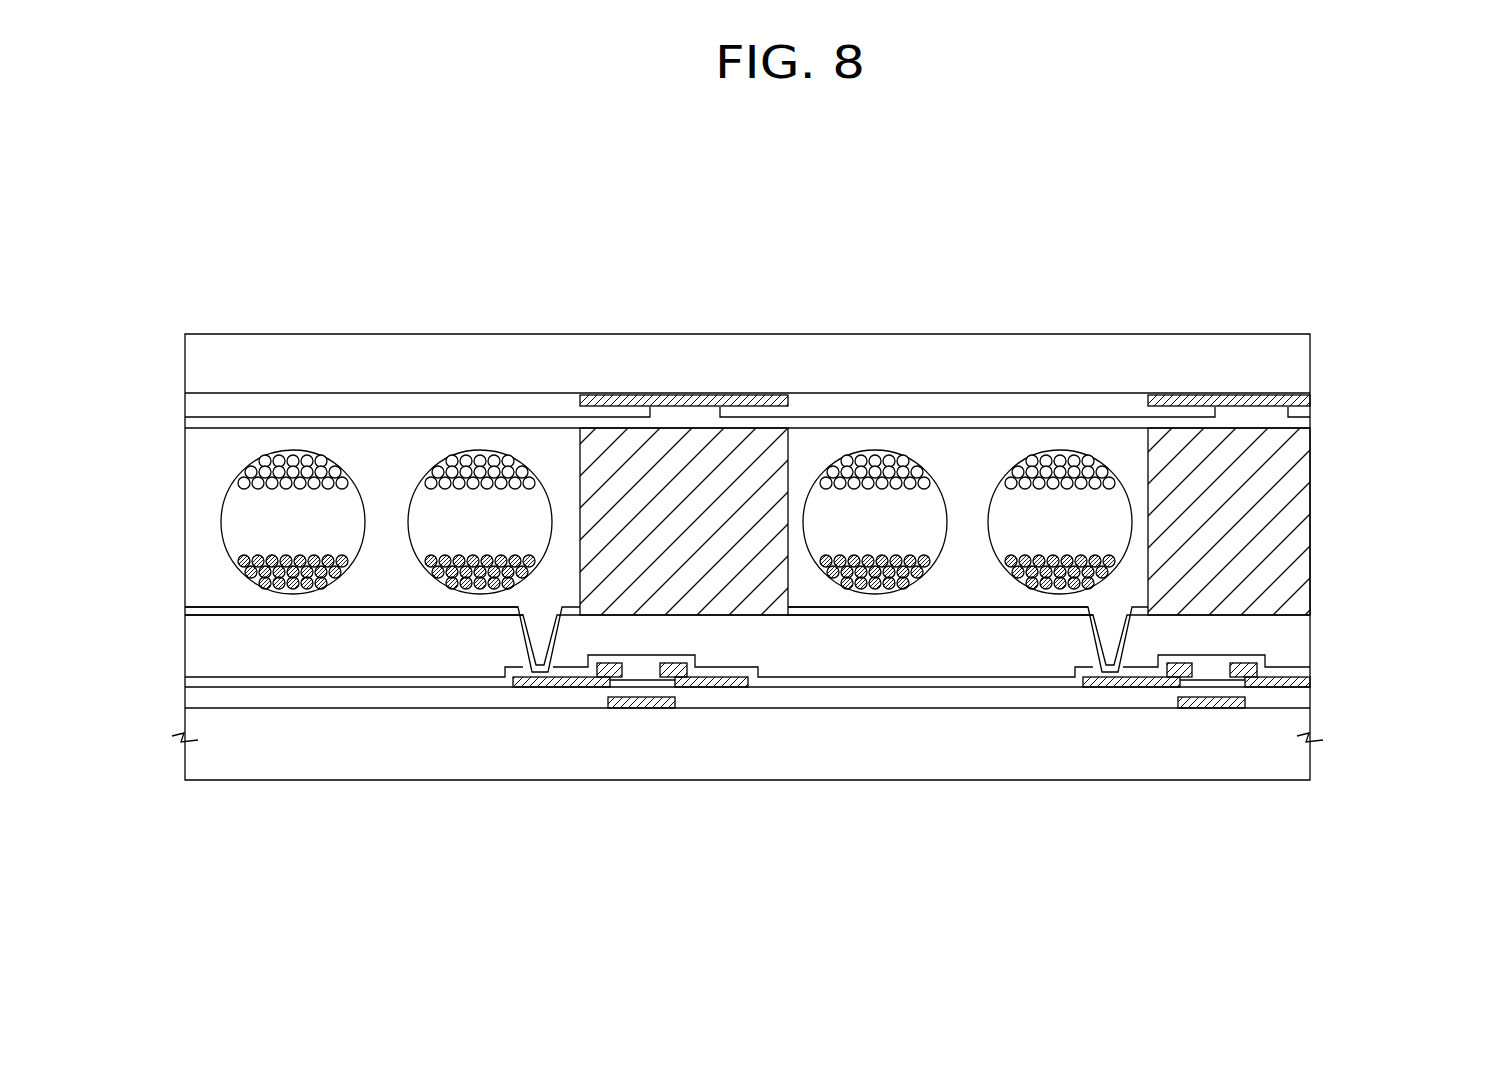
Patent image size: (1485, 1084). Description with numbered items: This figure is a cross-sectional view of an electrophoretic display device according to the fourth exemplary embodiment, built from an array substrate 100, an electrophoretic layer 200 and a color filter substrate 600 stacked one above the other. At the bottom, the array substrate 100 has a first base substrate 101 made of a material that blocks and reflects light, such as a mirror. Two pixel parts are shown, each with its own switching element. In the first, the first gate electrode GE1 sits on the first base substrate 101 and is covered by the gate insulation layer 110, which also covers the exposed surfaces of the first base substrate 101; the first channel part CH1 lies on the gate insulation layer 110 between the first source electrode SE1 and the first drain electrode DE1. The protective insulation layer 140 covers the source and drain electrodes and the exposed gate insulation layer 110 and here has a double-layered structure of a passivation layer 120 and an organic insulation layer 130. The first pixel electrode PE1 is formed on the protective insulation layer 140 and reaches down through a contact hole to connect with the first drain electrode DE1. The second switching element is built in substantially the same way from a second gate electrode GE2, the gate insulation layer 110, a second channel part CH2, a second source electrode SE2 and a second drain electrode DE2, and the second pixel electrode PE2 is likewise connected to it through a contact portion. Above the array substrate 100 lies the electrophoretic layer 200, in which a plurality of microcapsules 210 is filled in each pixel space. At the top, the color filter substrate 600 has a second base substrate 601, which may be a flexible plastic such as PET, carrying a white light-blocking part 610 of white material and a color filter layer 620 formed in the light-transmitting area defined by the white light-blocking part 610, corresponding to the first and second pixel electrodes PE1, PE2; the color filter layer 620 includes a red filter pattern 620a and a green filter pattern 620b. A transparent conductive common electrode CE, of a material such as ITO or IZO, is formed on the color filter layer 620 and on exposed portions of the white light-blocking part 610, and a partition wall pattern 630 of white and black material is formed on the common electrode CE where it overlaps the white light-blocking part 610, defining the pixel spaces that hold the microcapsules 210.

The color filter substrate 600 is at (168, 336).
The second base substrate 601 is at (1304, 360).
The white light-blocking part 610 is at (1304, 398).
The color filter layer 620 is at (1020, 262).
The red filter pattern 620a is at (496, 402).
The green filter pattern 620b is at (986, 400).
The common electrode CE is at (1253, 418).
The electrophoretic layer 200 is at (168, 430).
The microcapsules 210 is at (850, 458).
The partition wall pattern 630 is at (1292, 483).
The array substrate 100 is at (168, 610).
The protective insulation layer 140 is at (1405, 627).
The organic insulation layer 130 is at (1304, 637).
The passivation layer 120 is at (1304, 668).
The gate insulation layer 110 is at (1304, 697).
The first base substrate 101 is at (1304, 722).
The first pixel electrode PE1 is at (377, 613).
The first drain electrode DE1 is at (555, 688).
The first gate electrode GE1 is at (620, 708).
The first channel part CH1 is at (648, 684).
The first source electrode SE1 is at (724, 688).
The second pixel electrode PE2 is at (930, 607).
The second drain electrode DE2 is at (1120, 688).
The second gate electrode GE2 is at (1185, 708).
The second channel part CH2 is at (1207, 684).
The second source electrode SE2 is at (1272, 688).